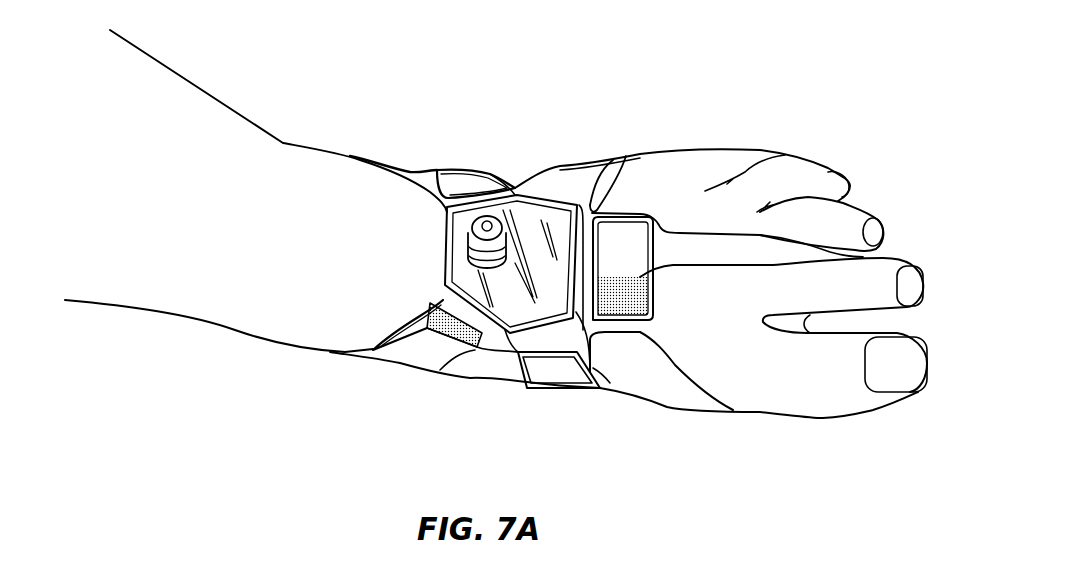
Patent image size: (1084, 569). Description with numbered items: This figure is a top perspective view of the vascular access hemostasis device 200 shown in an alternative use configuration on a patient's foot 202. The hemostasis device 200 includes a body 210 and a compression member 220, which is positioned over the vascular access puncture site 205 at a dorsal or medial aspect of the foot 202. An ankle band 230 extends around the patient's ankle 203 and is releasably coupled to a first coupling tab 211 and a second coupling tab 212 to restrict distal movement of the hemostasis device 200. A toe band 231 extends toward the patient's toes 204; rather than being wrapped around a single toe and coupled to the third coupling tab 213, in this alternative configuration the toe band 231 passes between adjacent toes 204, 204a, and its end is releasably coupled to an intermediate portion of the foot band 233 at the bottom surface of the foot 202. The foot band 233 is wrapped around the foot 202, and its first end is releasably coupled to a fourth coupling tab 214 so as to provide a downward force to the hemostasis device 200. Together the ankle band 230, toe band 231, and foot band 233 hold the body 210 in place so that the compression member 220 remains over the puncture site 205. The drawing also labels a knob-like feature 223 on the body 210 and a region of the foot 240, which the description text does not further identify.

The hemostasis device 200 is at (603, 121).
The foot 202 is at (663, 398).
The ankle 203 is at (318, 163).
The toes 204 is at (870, 277).
The adjacent toe 204a is at (850, 213).
The vascular access puncture site 205 is at (520, 256).
The body 210 is at (588, 217).
The first coupling tab 211 is at (482, 350).
The second coupling tab 212 is at (503, 173).
The third coupling tab 213 is at (727, 410).
The fourth coupling tab 214 is at (593, 368).
The compression member 220 is at (505, 305).
The adjustment knob 223 is at (475, 227).
The ankle band 230 is at (438, 170).
The toe band 231 is at (637, 237).
The foot band 233 is at (567, 173).
The foot dorsum 240 is at (733, 245).